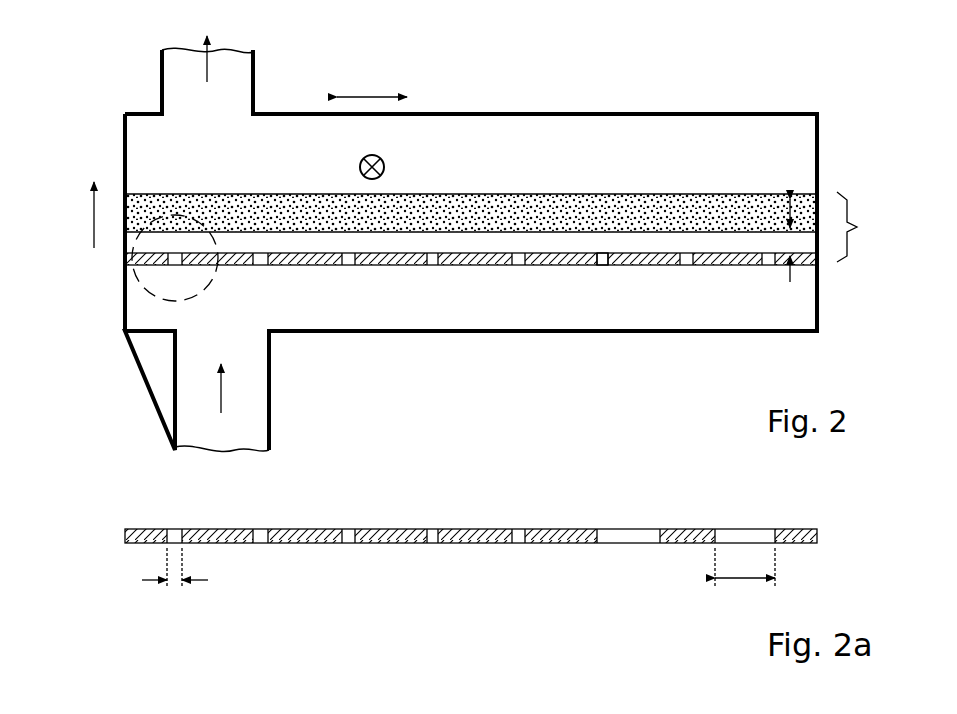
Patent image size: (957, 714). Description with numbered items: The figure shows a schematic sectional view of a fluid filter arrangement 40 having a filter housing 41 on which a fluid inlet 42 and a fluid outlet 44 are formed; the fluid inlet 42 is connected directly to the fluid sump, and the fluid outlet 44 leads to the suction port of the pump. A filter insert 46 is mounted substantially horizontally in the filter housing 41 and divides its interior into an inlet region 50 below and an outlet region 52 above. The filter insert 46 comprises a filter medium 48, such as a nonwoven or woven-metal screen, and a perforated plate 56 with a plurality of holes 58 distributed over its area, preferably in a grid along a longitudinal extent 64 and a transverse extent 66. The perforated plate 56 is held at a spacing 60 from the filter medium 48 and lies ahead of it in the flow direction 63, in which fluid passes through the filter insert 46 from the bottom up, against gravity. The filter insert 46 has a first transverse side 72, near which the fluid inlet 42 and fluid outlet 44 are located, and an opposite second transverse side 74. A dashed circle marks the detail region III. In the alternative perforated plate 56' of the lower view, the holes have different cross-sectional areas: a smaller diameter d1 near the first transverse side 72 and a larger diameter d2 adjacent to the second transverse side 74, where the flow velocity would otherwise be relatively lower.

In FIG. 2, the fluid filter arrangement 40 is at (863, 118).
In FIG. 2, the filter housing 41 is at (708, 110).
In FIG. 2, the fluid inlet 42 is at (252, 375).
In FIG. 2, the fluid outlet 44 is at (255, 73).
In FIG. 2, the filter insert 46 is at (843, 227).
In FIG. 2, the filter medium 48 is at (653, 202).
In FIG. 2, the inlet region 50 is at (530, 302).
In FIG. 2, the outlet region 52 is at (582, 133).
In FIG. 2, the perforated plate 56 is at (471, 320).
In FIG. 2A, the perforated plate 56' is at (471, 582).
In FIG. 2, the holes 58 is at (605, 264).
In FIG. 2, the spacing 60 is at (790, 275).
In FIG. 2, the flow direction 63 is at (92, 215).
In FIG. 2, the longitudinal extent 64 is at (385, 167).
In FIG. 2, the transverse extent 66 is at (372, 93).
In FIG. 2, the first transverse side 72 is at (125, 135).
In FIG. 2, the second transverse side 74 is at (818, 155).
In FIG. 2, the detail view III is at (157, 298).
In FIG. 2A, the diameter d1 is at (207, 585).
In FIG. 2A, the diameter d2 is at (745, 580).